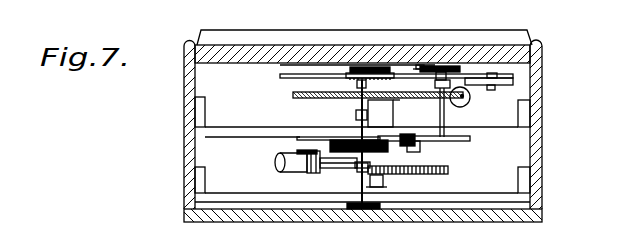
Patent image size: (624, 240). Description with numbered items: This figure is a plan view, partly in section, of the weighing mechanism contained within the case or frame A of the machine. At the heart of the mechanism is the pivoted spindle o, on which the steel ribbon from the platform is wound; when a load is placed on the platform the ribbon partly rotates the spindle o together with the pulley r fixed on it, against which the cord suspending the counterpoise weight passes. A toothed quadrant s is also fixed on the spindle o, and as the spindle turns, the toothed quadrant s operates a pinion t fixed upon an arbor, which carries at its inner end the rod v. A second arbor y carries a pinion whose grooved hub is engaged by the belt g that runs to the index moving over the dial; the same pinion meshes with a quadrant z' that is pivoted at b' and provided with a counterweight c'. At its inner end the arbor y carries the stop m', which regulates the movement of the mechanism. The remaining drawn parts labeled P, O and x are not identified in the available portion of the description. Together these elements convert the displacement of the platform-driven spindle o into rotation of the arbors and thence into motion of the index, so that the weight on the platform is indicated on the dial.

The case or frame A is at (530, 127).
The counterweight c' is at (396, 82).
The quadrant z' is at (399, 79).
The belt g is at (345, 80).
The arbor y is at (358, 102).
The spindle o is at (380, 113).
The pulley r is at (403, 99).
The pivot b' is at (446, 108).
The pulley P is at (468, 99).
The rod v is at (394, 136).
The lower gear O is at (342, 152).
The stop m' is at (290, 171).
The pinion t is at (347, 172).
The nut x is at (355, 183).
The toothed quadrant s is at (423, 167).